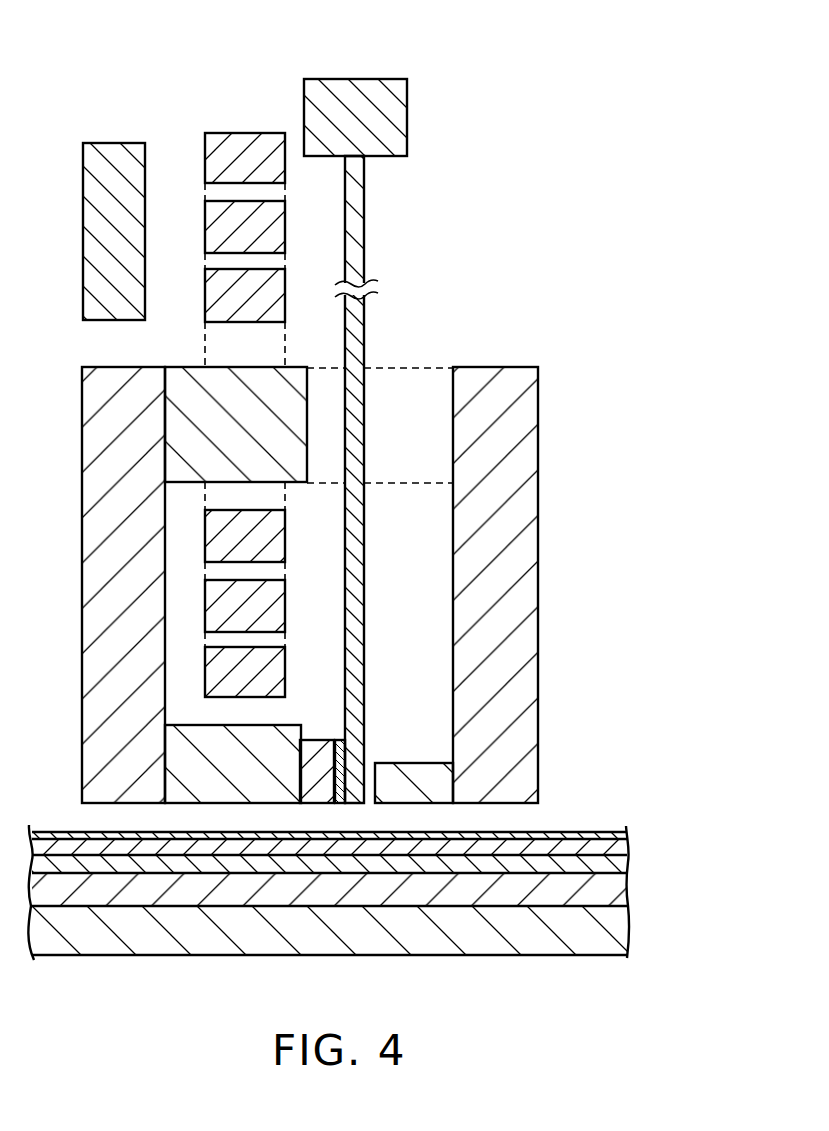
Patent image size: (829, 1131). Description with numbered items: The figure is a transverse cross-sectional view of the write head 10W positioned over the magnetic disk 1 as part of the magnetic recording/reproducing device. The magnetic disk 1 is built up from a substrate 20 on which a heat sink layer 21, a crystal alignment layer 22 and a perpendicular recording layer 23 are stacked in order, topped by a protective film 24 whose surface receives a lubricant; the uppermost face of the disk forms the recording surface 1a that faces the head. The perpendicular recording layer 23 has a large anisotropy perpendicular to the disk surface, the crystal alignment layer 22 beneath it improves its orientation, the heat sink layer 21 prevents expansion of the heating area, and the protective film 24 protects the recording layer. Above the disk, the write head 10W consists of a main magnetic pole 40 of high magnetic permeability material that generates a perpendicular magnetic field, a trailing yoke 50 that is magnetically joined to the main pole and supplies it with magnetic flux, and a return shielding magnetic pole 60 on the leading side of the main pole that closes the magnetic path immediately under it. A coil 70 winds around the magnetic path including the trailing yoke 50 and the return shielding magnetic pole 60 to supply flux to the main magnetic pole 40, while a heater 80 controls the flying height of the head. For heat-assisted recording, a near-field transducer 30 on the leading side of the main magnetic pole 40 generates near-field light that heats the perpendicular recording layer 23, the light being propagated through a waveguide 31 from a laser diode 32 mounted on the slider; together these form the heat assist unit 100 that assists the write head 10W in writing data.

The magnetic disk 1 is at (717, 844).
The recording surface 1a is at (582, 832).
The write head 10W is at (592, 254).
The substrate 20 is at (627, 930).
The heat sink layer 21 is at (627, 890).
The crystal alignment layer 22 is at (627, 865).
The perpendicular recording layer 23 is at (627, 849).
The protective film 24 is at (627, 834).
The near-field transducer 30 is at (340, 740).
The waveguide 31 is at (364, 622).
The laser diode 32 is at (407, 122).
The main magnetic pole 40 is at (314, 740).
The trailing yoke 50 is at (82, 563).
The return shielding magnetic pole 60 is at (538, 569).
The coil 70 is at (205, 155).
The heater 80 is at (113, 143).
The heat assist unit 100 is at (424, 76).